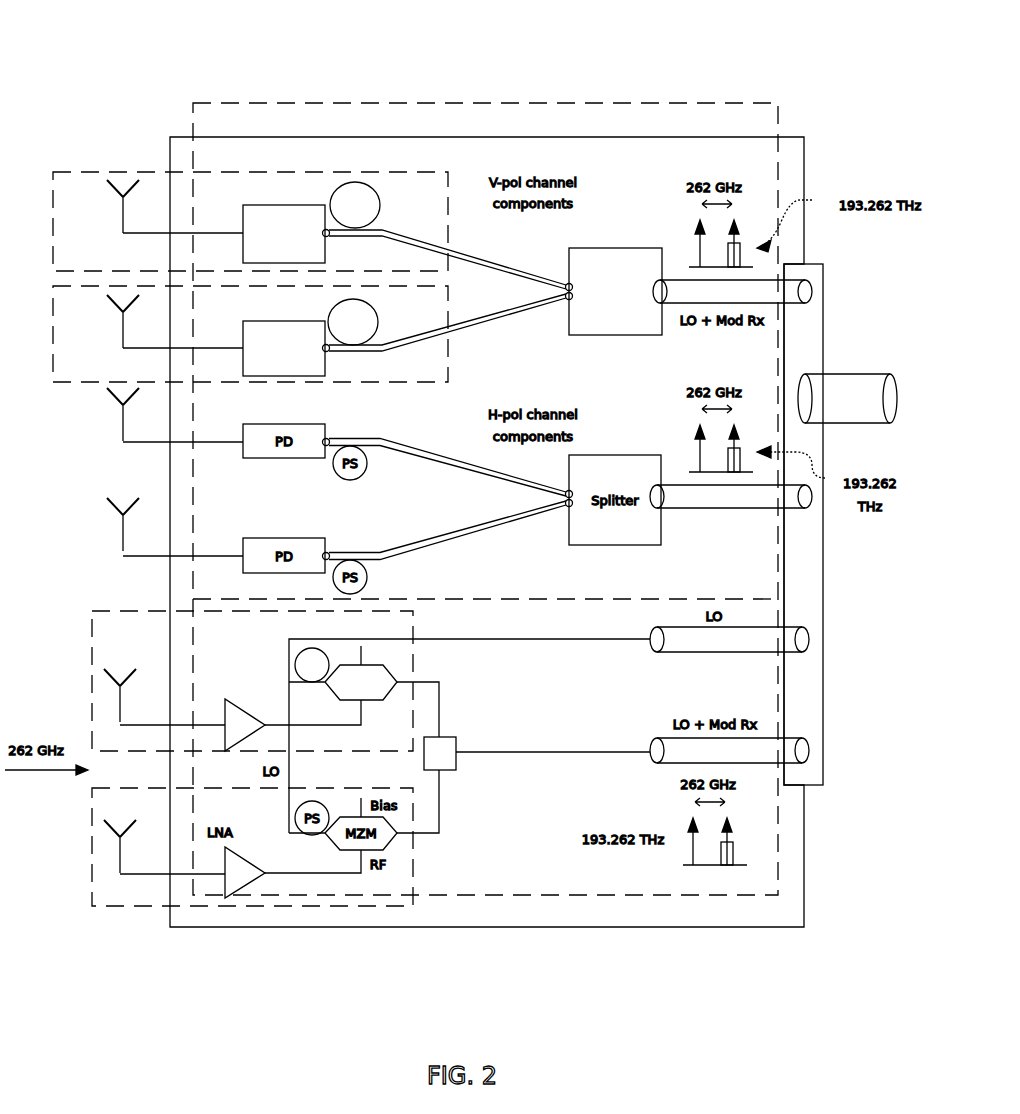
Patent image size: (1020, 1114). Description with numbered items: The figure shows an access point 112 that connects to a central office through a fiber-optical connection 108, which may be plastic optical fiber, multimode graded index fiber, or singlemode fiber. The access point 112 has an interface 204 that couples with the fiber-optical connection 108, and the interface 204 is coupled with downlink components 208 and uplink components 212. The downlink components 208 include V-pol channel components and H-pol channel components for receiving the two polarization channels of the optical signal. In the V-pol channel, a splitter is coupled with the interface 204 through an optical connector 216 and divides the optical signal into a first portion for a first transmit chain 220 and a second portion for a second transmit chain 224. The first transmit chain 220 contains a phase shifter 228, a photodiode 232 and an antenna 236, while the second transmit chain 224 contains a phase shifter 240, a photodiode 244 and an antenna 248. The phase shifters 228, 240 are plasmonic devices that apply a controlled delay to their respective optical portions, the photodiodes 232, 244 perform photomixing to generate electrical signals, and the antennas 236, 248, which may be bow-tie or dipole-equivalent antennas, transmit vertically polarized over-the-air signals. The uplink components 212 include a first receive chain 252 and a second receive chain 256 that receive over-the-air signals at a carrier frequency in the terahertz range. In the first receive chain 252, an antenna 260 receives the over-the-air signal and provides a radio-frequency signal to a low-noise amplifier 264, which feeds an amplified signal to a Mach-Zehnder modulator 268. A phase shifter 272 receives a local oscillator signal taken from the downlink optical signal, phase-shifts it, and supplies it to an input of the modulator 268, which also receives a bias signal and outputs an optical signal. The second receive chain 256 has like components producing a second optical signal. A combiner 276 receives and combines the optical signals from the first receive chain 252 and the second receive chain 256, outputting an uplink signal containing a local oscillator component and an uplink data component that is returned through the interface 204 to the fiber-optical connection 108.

The access point 112 is at (175, 46).
The downlink components 208 is at (778, 103).
The uplink components 212 is at (483, 895).
The interface 204 is at (822, 341).
The fiber-optical connection 108 is at (847, 398).
The first transmit chain 220 is at (158, 172).
The second transmit chain 224 is at (92, 383).
The antenna 236 is at (128, 236).
The antenna 248 is at (128, 351).
The photodiode 232 is at (286, 234).
The phase shifter 228 is at (355, 205).
The photodiode 244 is at (286, 348).
The phase shifter 240 is at (353, 322).
The optical connector 216 is at (732, 291).
The first receive chain 252 is at (121, 611).
The second receive chain 256 is at (131, 906).
The antenna 260 is at (112, 716).
The low-noise amplifier 264 is at (238, 704).
The phase shifter 272 is at (289, 639).
The Mach-Zehnder modulator 268 is at (392, 673).
The combiner 276 is at (455, 737).